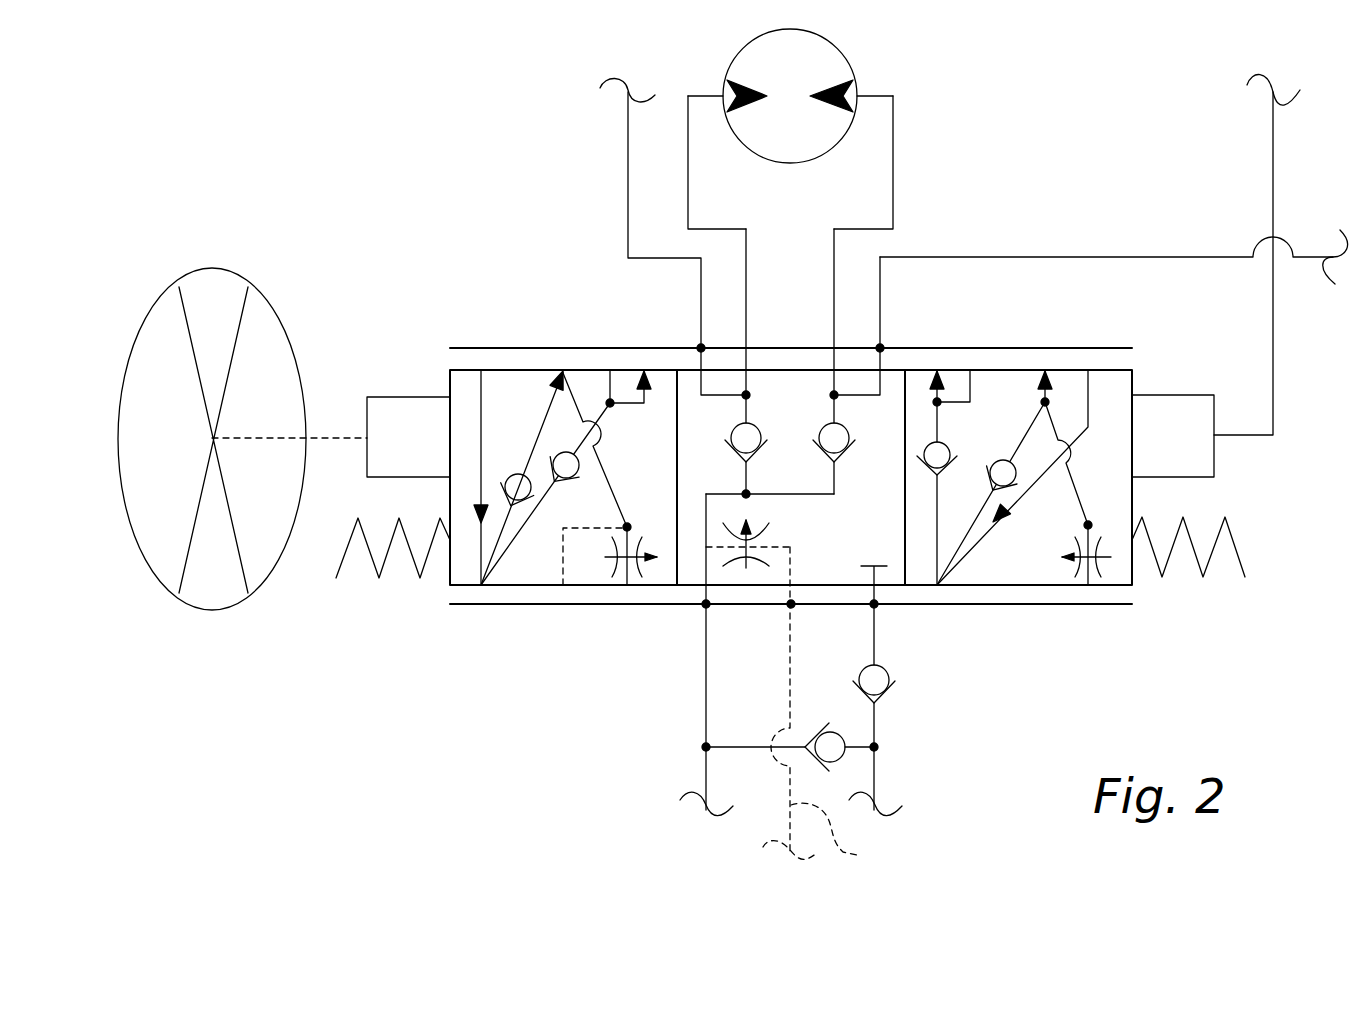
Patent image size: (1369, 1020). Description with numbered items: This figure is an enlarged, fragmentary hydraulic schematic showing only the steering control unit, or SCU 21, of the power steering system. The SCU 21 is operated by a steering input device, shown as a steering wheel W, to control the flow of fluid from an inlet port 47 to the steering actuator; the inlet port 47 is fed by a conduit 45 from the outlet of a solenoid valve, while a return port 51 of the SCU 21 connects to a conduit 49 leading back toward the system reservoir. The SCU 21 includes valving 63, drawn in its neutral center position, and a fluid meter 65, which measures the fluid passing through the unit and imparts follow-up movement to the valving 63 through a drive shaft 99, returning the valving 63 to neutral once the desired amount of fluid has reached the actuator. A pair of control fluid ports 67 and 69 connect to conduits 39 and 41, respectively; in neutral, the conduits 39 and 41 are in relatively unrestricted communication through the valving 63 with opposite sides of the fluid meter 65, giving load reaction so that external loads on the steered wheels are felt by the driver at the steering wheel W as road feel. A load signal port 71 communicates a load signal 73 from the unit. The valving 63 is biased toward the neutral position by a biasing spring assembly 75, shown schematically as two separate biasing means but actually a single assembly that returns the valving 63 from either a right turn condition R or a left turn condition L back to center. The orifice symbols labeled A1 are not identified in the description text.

The steering control unit 21 is at (519, 303).
The conduit 39 is at (1103, 257).
The conduit 41 is at (628, 182).
The conduit 45 is at (875, 773).
The inlet port 47 is at (875, 604).
The conduit 49 is at (706, 773).
The return port 51 is at (706, 604).
The valving 63 is at (990, 335).
The fluid meter 65 is at (847, 53).
The control fluid port 67 is at (880, 348).
The control fluid port 69 is at (701, 348).
The load signal port 71 is at (791, 604).
The load signal 73 is at (839, 834).
The biasing spring assembly 75 is at (367, 554).
The drive shaft 99 is at (1273, 177).
The steering wheel W is at (278, 325).
The left turn condition L is at (408, 422).
The right turn condition R is at (1173, 421).
The adjustable throttle A1 is at (647, 521).